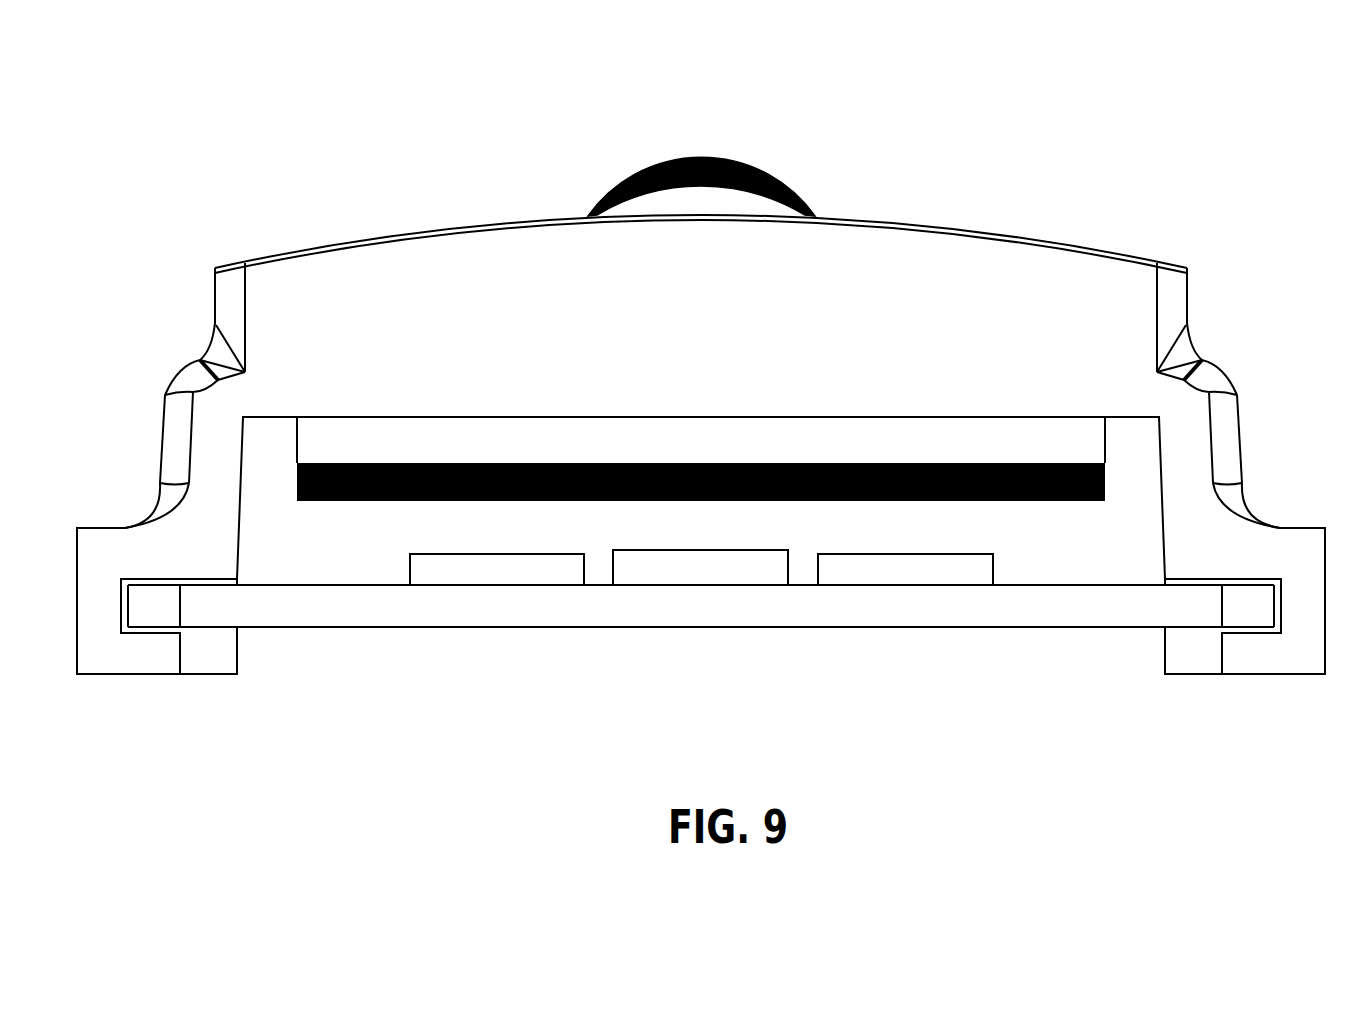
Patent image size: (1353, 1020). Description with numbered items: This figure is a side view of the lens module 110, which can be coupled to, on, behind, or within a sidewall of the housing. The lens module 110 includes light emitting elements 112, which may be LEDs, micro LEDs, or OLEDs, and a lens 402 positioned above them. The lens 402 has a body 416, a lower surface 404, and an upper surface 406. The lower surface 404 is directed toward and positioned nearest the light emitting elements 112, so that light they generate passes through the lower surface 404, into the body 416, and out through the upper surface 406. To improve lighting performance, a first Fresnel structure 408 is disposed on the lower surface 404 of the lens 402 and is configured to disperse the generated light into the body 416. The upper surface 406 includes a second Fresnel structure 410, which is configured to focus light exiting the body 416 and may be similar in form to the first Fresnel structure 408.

The lens module 110 is at (262, 131).
The light emitting elements 112 is at (513, 573).
The lens 402 is at (320, 273).
The lower surface 404 is at (327, 433).
The upper surface 406 is at (973, 227).
The first Fresnel structure 408 is at (1053, 501).
The second Fresnel structure 410 is at (708, 157).
The body 416 is at (1112, 303).